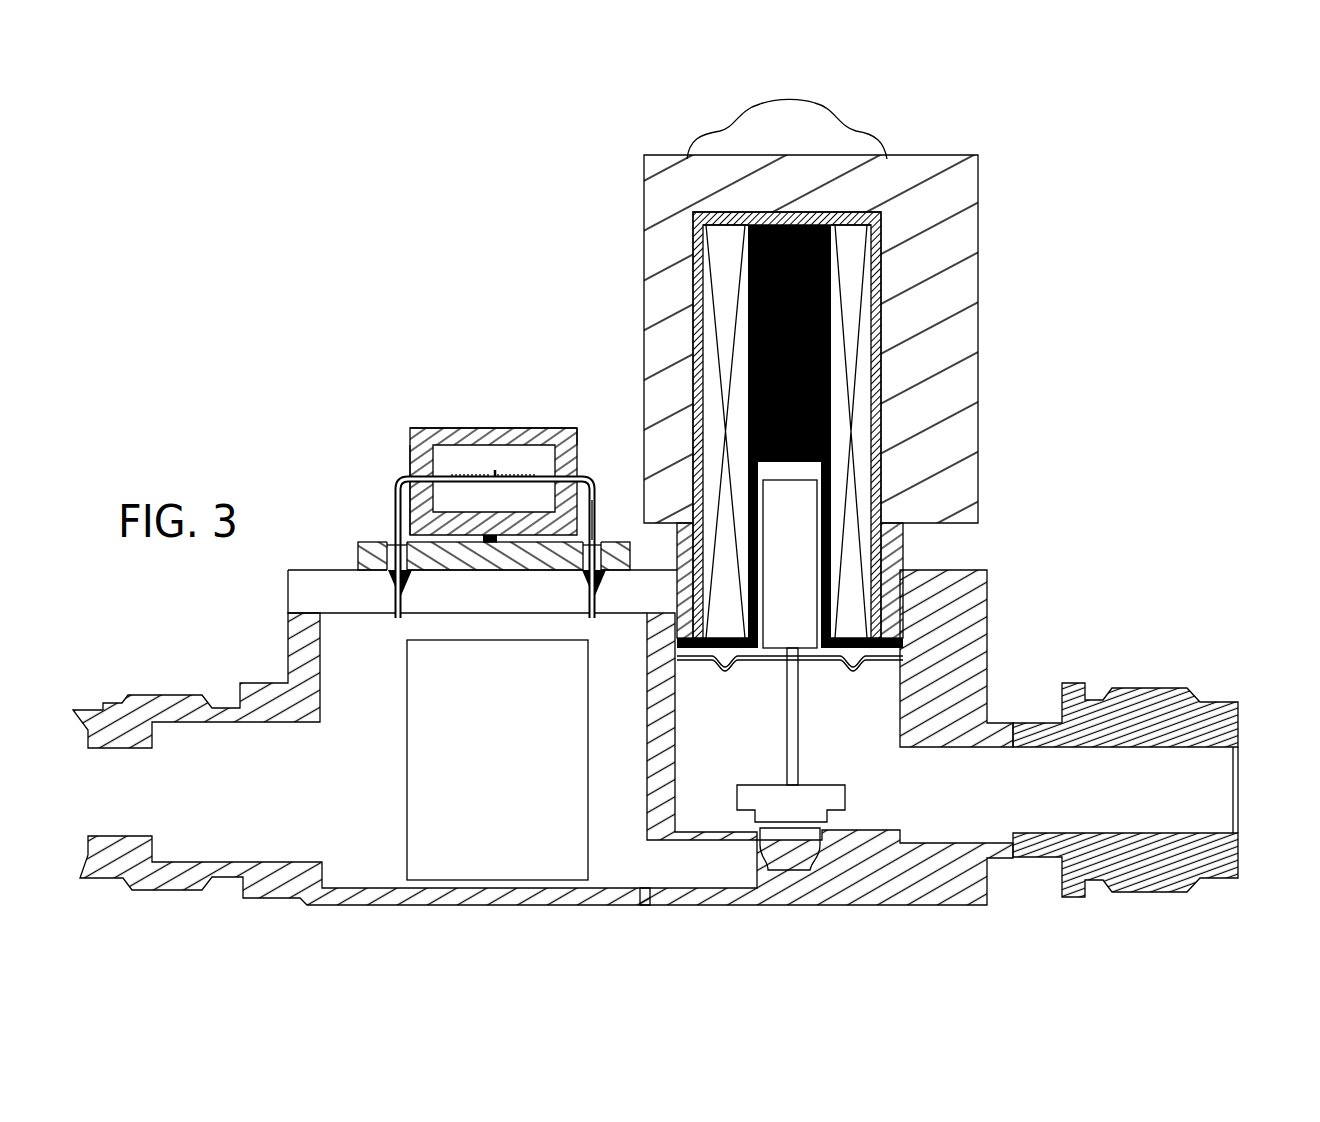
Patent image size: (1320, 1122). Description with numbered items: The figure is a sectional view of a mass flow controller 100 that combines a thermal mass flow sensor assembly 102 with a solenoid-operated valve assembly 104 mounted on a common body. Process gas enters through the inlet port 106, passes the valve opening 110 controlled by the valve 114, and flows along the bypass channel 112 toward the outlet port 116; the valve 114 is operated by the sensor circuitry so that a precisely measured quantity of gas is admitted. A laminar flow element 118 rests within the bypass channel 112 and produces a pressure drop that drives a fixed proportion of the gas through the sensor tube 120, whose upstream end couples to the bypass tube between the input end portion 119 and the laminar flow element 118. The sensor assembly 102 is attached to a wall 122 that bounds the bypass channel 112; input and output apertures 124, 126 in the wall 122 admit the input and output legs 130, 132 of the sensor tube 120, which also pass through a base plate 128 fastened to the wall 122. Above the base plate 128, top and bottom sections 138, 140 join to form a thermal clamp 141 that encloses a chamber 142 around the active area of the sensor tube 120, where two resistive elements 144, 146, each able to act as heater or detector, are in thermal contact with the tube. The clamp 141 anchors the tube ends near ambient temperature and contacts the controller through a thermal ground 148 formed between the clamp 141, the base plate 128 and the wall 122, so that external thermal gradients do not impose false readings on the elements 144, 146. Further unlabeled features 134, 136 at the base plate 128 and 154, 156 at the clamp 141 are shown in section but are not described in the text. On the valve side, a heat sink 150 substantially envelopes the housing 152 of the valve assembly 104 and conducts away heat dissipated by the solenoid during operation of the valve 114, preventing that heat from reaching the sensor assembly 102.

The mass flow controller 100 is at (1096, 170).
The thermal mass flow sensor assembly 102 is at (519, 340).
The valve assembly 104 is at (989, 442).
The inlet port 106 is at (1218, 778).
The valve opening 110 is at (787, 861).
The bypass channel 112 is at (604, 706).
The valve 114 is at (840, 806).
The outlet port 116 is at (123, 797).
The laminar flow element 118 is at (437, 778).
The input end portion 119 is at (343, 674).
The sensor tube 120 is at (495, 470).
The wall 122 is at (363, 607).
The input aperture 124 is at (590, 613).
The output aperture 126 is at (392, 617).
The base plate 128 is at (360, 557).
The input leg 130 is at (595, 512).
The output leg 132 is at (398, 492).
The plate opening 134 is at (603, 540).
The plate opening 136 is at (396, 545).
The top section 138 is at (415, 443).
The bottom section 140 is at (410, 515).
The thermal clamp 141 is at (584, 477).
The chamber 142 is at (443, 450).
The resistive element 144 is at (465, 478).
The resistive element 146 is at (525, 478).
The thermal ground 148 is at (518, 568).
The heat sink 150 is at (960, 263).
The housing 152 is at (836, 124).
The housing corner 154 is at (574, 432).
The housing side wall 156 is at (412, 466).